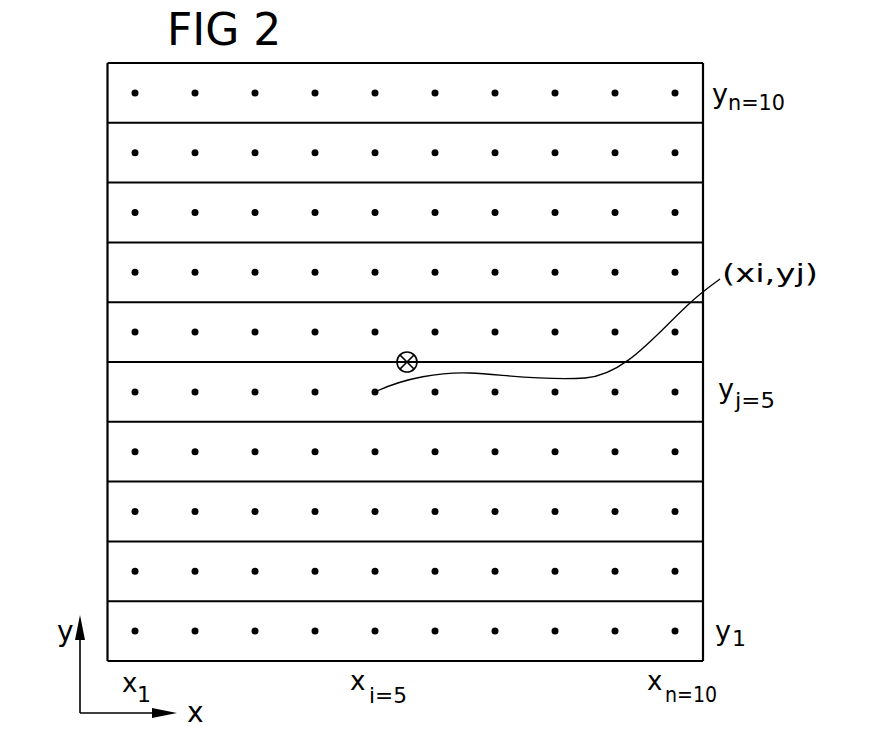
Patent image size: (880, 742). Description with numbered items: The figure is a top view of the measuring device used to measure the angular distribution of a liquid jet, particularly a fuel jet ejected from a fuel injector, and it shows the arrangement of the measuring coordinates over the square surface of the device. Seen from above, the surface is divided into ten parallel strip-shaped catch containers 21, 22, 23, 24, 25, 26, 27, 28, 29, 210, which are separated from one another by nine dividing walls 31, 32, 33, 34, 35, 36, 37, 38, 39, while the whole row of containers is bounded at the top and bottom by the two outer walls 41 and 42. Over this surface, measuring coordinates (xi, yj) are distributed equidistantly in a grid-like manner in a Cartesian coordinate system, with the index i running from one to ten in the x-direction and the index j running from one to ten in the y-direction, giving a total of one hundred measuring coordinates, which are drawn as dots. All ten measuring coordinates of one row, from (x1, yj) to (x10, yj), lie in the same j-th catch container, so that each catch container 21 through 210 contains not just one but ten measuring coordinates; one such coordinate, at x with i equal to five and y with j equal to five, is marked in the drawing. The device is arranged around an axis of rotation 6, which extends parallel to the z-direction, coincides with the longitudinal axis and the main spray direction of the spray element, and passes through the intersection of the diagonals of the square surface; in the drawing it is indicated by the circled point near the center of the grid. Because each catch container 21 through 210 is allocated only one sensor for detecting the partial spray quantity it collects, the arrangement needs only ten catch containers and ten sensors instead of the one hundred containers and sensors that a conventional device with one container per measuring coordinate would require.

The axis of rotation 6 is at (407, 352).
The catch container 21 is at (360, 112).
The catch container 22 is at (360, 172).
The catch container 23 is at (360, 232).
The catch container 24 is at (360, 291).
The catch container 25 is at (360, 351).
The catch container 26 is at (360, 411).
The catch container 27 is at (360, 471).
The catch container 28 is at (360, 530).
The catch container 29 is at (360, 590).
The catch container 210 is at (358, 650).
The dividing wall 31 is at (127, 123).
The dividing wall 32 is at (127, 183).
The dividing wall 33 is at (127, 242).
The dividing wall 34 is at (127, 302).
The dividing wall 35 is at (127, 362).
The dividing wall 36 is at (127, 422).
The dividing wall 37 is at (127, 482).
The dividing wall 38 is at (127, 541).
The dividing wall 39 is at (127, 601).
The outer wall 41 is at (685, 63).
The outer wall 42 is at (558, 661).